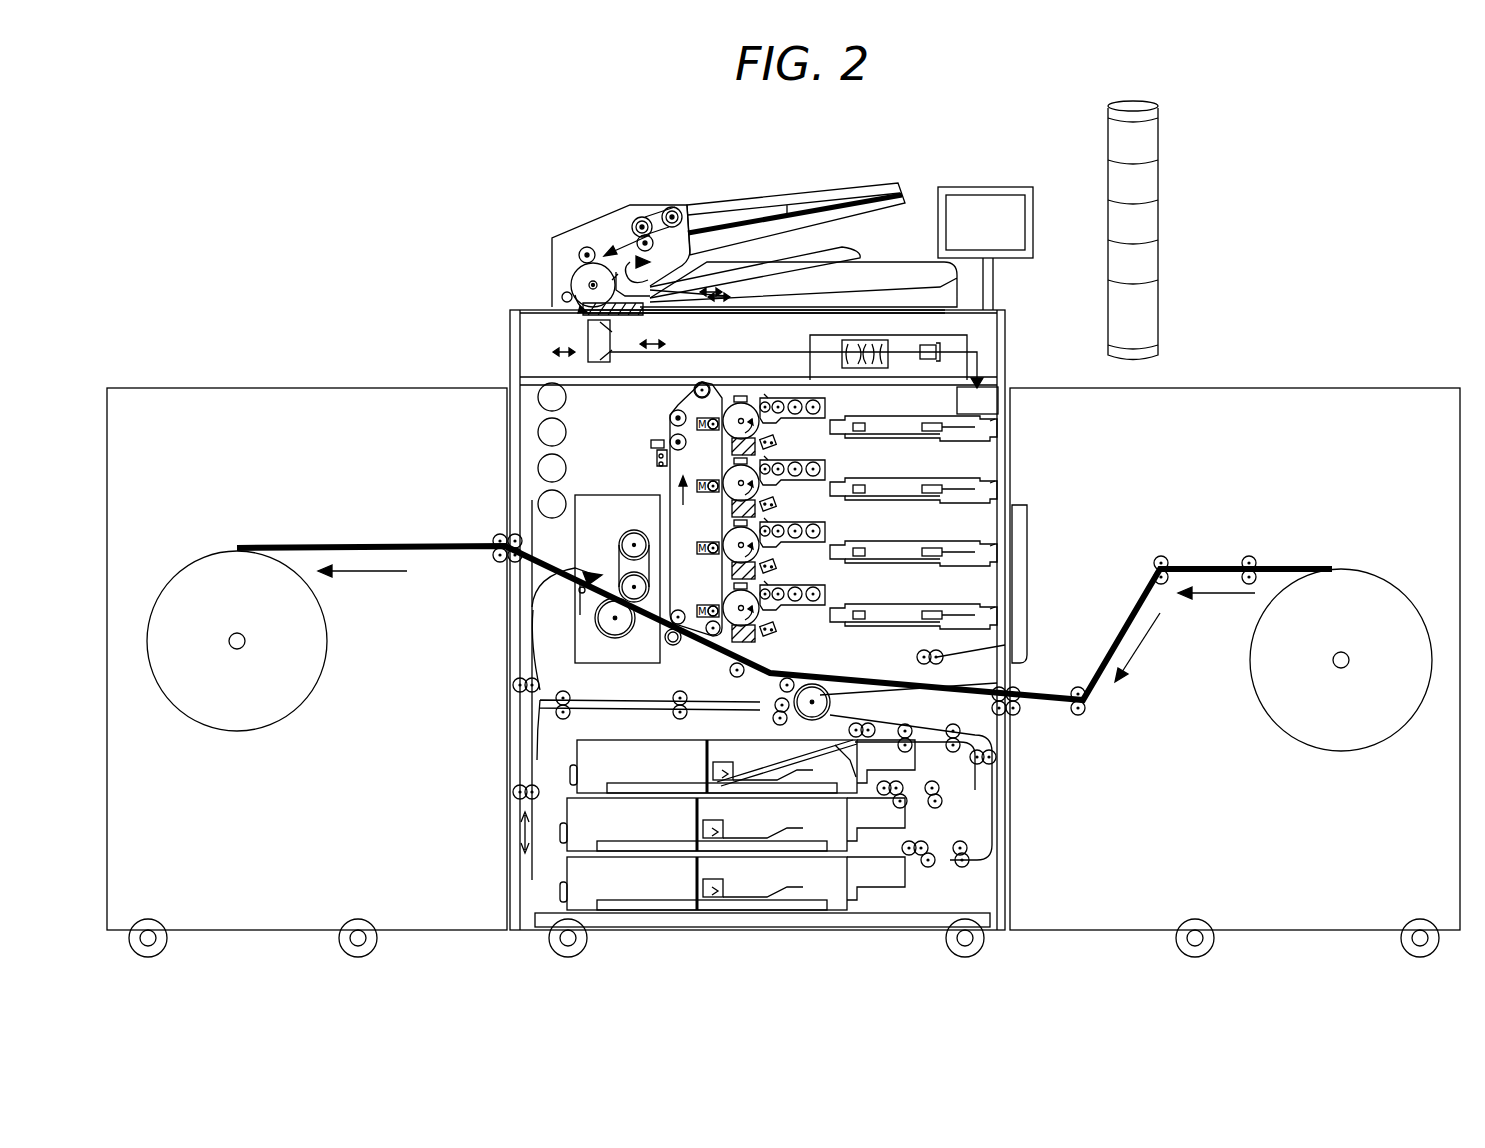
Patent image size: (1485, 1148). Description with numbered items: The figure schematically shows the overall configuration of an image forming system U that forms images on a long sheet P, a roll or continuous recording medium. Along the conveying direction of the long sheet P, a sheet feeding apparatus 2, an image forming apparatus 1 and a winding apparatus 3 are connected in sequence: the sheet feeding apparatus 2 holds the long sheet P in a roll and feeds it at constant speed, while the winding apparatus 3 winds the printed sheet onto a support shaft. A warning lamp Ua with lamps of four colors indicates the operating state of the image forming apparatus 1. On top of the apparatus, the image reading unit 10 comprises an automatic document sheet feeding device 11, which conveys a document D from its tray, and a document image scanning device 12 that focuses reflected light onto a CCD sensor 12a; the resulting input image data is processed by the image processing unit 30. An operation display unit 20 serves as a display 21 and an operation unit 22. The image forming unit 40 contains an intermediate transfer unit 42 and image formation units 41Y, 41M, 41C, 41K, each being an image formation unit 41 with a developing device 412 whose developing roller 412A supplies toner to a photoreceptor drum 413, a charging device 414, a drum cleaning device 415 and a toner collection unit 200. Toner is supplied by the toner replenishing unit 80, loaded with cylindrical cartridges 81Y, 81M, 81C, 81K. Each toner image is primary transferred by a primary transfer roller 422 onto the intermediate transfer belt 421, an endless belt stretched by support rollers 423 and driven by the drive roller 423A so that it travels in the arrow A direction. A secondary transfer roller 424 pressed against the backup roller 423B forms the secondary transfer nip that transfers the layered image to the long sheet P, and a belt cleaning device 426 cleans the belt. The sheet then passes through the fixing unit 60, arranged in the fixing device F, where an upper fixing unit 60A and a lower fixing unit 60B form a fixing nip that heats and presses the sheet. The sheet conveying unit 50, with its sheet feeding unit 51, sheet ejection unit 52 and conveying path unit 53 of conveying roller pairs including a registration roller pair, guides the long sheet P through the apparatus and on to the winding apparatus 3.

The image forming apparatus 1 is at (720, 206).
The sheet feeding apparatus 2 is at (1198, 388).
The winding apparatus 3 is at (310, 388).
The image reading unit 10 is at (754, 280).
The automatic document sheet feeding device 11 is at (552, 260).
The document image scanning device 12 is at (775, 338).
The CCD sensor 12a is at (940, 352).
The operation display unit 20 is at (999, 220).
The display 21 is at (986, 188).
The operation unit 22 is at (988, 284).
The image processing unit 30 is at (984, 384).
The image forming unit 40 is at (786, 483).
The image formation unit 41 is at (847, 463).
The image formation unit for Y component 41Y is at (839, 447).
The image formation unit for M component 41M is at (839, 509).
The image formation unit for C component 41C is at (839, 572).
The image formation unit for K component 41K is at (797, 625).
The developing device 412 is at (811, 390).
The developing roller 412A is at (770, 396).
The photoreceptor drum 413 is at (741, 396).
The charging device 414 is at (768, 440).
The drum cleaning device 415 is at (730, 478).
The intermediate transfer unit 42 is at (671, 509).
The intermediate transfer belt 421 is at (668, 502).
The primary transfer roller 422 is at (704, 390).
The support rollers 423 is at (659, 509).
The drive roller 423A is at (722, 605).
The backup roller 423B is at (673, 622).
The secondary transfer roller 424 is at (674, 644).
The belt cleaning device 426 is at (654, 442).
The sheet conveying unit 50 is at (884, 690).
The sheet feeding unit 51 is at (654, 731).
The sheet ejection unit 52 is at (496, 535).
The conveying path unit 53 is at (782, 698).
The fixing unit 60 is at (558, 592).
The upper fixing unit 60A is at (614, 548).
The lower fixing unit 60B is at (581, 615).
The toner replenishing unit 80 is at (472, 441).
The cartridge for Y toner 81Y is at (516, 396).
The cartridge for M toner 81M is at (518, 432).
The cartridge for C toner 81C is at (517, 468).
The cartridge for K toner 81K is at (495, 496).
The toner collection unit 200 is at (738, 402).
The arrow A direction A is at (691, 497).
The document D is at (825, 206).
The fixing device F is at (575, 543).
The long sheet P is at (294, 544).
The image forming system U is at (1182, 215).
The warning lamp Ua is at (1146, 102).